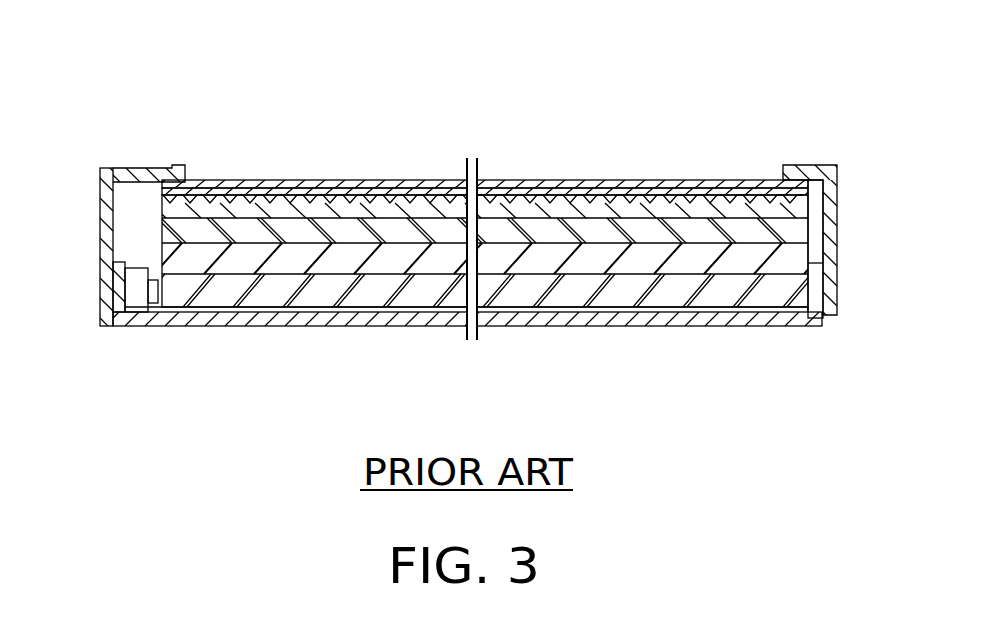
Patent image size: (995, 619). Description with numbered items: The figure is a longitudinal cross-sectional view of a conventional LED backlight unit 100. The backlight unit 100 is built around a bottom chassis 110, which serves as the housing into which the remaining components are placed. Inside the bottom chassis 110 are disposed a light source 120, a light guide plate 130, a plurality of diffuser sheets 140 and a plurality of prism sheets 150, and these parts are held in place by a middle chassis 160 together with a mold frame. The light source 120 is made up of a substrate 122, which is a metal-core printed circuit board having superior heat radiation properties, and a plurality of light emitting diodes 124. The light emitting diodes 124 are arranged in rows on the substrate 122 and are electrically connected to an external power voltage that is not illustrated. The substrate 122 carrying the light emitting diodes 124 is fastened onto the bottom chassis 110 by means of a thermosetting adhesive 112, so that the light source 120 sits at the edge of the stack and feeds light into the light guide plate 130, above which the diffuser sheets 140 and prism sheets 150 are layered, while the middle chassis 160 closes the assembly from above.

The backlight unit 100 is at (463, 200).
The bottom chassis 110 is at (738, 320).
The thermosetting adhesive 112 is at (128, 311).
The light source 120 is at (165, 207).
The substrate 122 is at (127, 278).
The light emitting diodes 124 is at (153, 292).
The light guide plate 130 is at (812, 270).
The diffuser sheets 140 is at (722, 258).
The prism sheets 150 is at (600, 180).
The middle chassis 160 is at (155, 169).